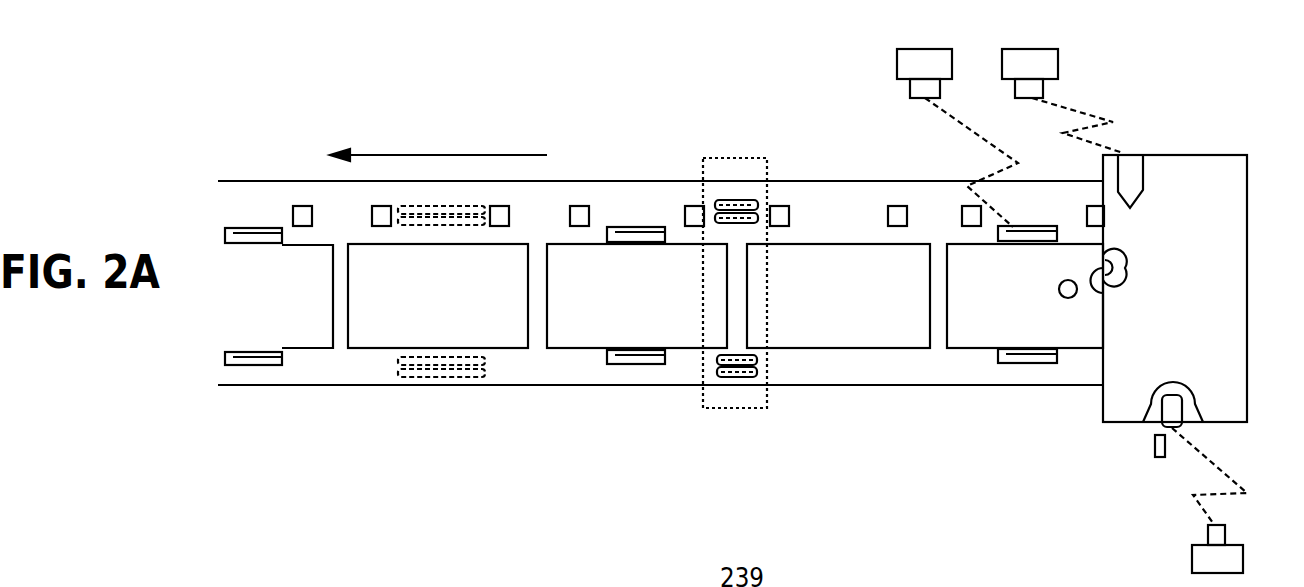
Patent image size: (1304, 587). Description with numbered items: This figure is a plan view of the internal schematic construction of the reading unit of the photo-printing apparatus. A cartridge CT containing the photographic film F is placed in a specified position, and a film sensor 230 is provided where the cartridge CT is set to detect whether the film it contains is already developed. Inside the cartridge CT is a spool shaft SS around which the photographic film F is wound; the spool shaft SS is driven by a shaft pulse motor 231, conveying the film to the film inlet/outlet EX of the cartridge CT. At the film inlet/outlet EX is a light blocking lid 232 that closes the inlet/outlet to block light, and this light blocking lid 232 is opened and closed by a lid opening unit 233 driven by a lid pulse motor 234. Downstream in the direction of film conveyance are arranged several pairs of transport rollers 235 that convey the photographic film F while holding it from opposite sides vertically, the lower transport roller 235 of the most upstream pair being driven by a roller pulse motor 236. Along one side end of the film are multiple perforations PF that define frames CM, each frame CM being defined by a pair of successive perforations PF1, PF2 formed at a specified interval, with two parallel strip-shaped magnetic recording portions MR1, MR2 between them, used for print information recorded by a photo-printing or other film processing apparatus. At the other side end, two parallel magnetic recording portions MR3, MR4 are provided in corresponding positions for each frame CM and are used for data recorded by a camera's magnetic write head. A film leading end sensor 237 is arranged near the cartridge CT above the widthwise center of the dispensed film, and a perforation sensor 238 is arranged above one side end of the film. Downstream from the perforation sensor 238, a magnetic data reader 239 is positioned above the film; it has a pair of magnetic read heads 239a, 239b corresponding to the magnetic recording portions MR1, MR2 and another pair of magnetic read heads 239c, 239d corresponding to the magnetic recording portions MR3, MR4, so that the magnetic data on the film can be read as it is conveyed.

The film sensor 230 is at (1155, 445).
The shaft pulse motor 231 is at (1192, 560).
The light blocking lid 232 is at (1125, 263).
The lid opening unit 233 is at (1141, 155).
The lid pulse motor 234 is at (1022, 58).
The transport rollers 235 is at (238, 367).
The roller pulse motor 236 is at (922, 58).
The film leading end sensor 237 is at (1071, 298).
The perforation sensor 238 is at (967, 206).
The magnetic data reader 239 is at (769, 268).
The magnetic read head 239a is at (737, 203).
The magnetic read head 239b is at (715, 206).
The magnetic read head 239c is at (715, 360).
The magnetic read head 239d is at (745, 378).
The perforations PF is at (575, 107).
The perforation PF1 is at (499, 205).
The perforation PF2 is at (793, 122).
The magnetic recording portion MR1 is at (422, 228).
The magnetic recording portion MR2 is at (448, 228).
The magnetic recording portion MR3 is at (395, 362).
The magnetic recording portion MR4 is at (443, 380).
The frame CM is at (572, 335).
The photographic film F is at (318, 372).
The film inlet/outlet EX is at (1103, 293).
The spool shaft SS is at (1184, 405).
The cartridge CT is at (1122, 380).